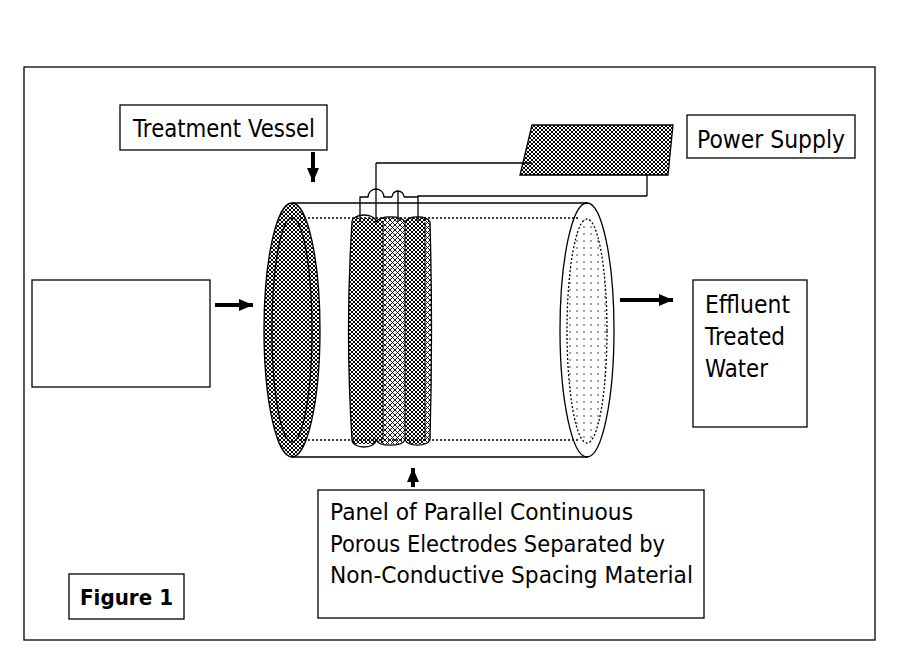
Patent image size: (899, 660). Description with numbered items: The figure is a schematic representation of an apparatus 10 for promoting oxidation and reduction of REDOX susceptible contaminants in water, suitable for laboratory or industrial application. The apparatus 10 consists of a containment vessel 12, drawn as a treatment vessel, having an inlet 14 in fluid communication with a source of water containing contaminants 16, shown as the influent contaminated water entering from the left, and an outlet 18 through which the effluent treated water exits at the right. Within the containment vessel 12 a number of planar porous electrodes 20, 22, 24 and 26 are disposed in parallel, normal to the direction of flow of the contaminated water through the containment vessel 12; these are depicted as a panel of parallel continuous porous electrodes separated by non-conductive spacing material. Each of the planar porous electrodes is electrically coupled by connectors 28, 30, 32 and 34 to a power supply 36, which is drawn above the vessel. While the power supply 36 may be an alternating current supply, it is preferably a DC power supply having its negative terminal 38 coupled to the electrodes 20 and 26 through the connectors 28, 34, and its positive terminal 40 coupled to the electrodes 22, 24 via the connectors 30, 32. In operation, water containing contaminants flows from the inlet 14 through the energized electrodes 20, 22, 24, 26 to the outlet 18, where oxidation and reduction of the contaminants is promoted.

The apparatus for promoting oxidation and reduction of water REDOX susceptible conta 10 is at (368, 60).
The containment vessel 12 is at (593, 212).
The inlet 14 is at (283, 242).
The source of water containing contaminants 16 is at (68, 279).
The outlet 18 is at (592, 268).
The planar porous electrode 20 is at (380, 243).
The planar porous electrode 22 is at (400, 283).
The planar porous electrode 24 is at (418, 322).
The planar porous electrode 26 is at (432, 363).
The connector 28 is at (355, 204).
The connector 30 is at (374, 176).
The connector 32 is at (401, 183).
The connector 34 is at (419, 203).
The power supply 36 is at (601, 145).
The negative terminal 38 is at (658, 168).
The positive terminal 40 is at (522, 155).